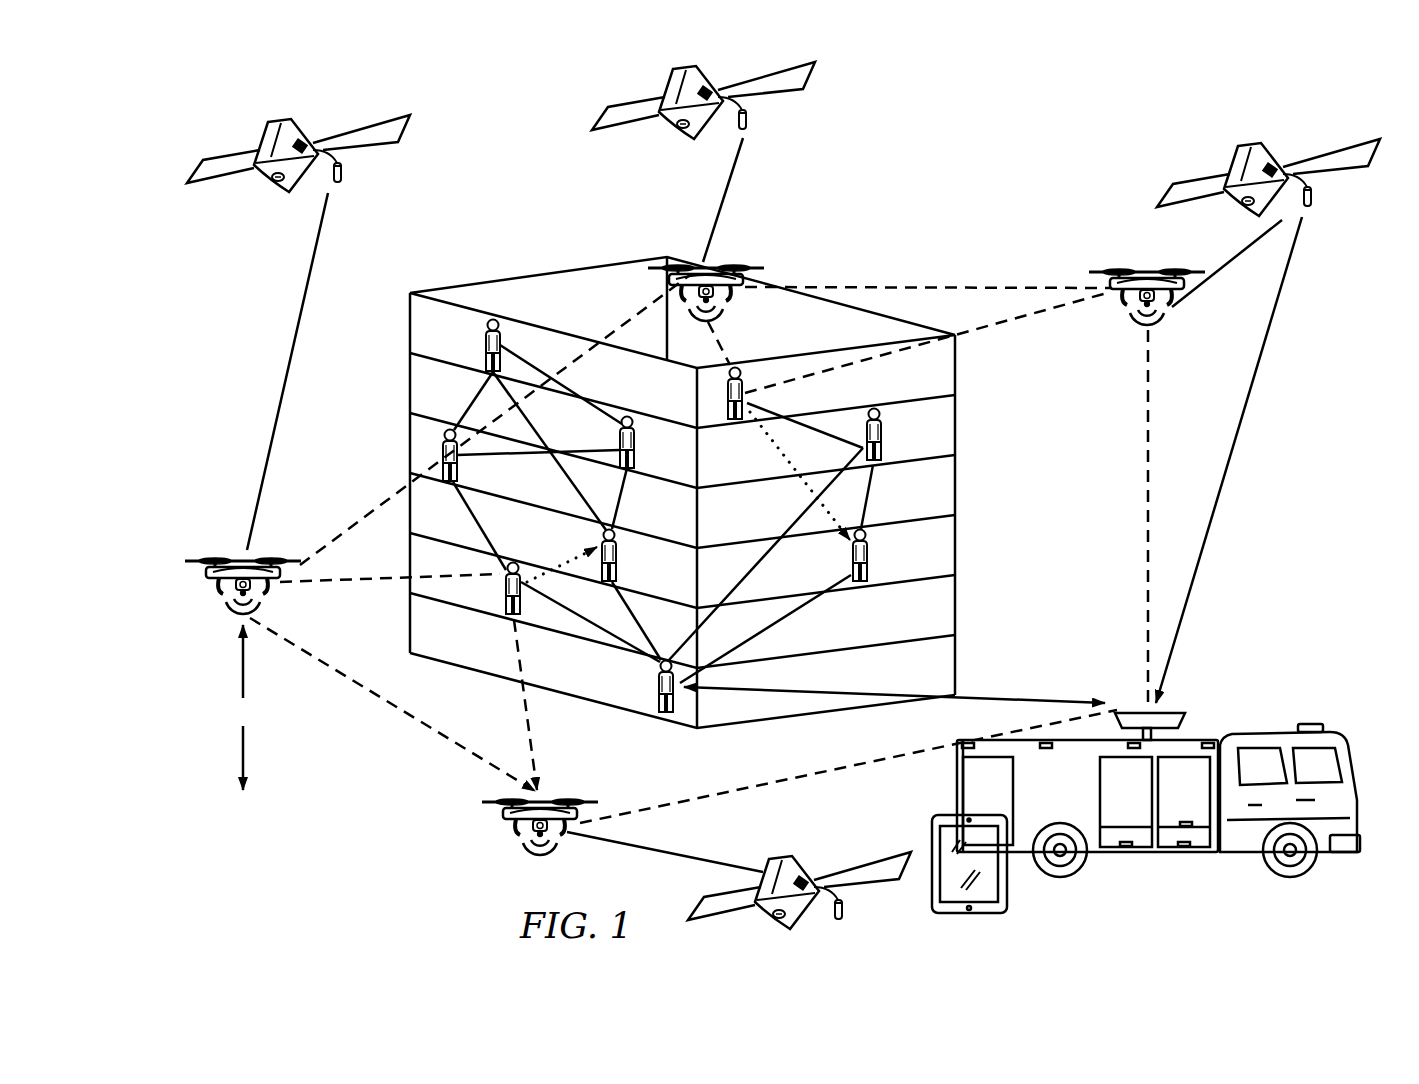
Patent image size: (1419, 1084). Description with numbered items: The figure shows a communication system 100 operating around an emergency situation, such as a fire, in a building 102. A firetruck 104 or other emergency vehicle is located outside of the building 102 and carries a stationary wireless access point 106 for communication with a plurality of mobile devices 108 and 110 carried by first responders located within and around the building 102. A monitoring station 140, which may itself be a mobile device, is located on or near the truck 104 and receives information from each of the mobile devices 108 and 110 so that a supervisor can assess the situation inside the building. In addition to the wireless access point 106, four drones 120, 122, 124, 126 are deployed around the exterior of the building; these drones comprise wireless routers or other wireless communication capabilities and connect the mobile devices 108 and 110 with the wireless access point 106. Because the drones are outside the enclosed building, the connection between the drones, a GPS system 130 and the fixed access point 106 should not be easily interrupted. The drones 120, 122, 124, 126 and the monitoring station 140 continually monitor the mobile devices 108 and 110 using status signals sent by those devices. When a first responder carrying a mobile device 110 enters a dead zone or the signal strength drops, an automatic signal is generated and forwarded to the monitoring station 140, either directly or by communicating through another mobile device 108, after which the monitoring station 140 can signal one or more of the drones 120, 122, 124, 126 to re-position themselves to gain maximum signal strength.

The communication system 100 is at (986, 162).
The building 102 is at (517, 278).
The firetruck 104 is at (1262, 733).
The stationary wireless access point 106 is at (1180, 713).
The mobile devices 108 is at (485, 340).
The mobile device 110 is at (595, 528).
The drone 120 is at (222, 588).
The drone 122 is at (738, 300).
The drone 124 is at (1121, 312).
The drone 126 is at (508, 826).
The GPS system 130 is at (283, 190).
The monitoring station 140 is at (1012, 888).